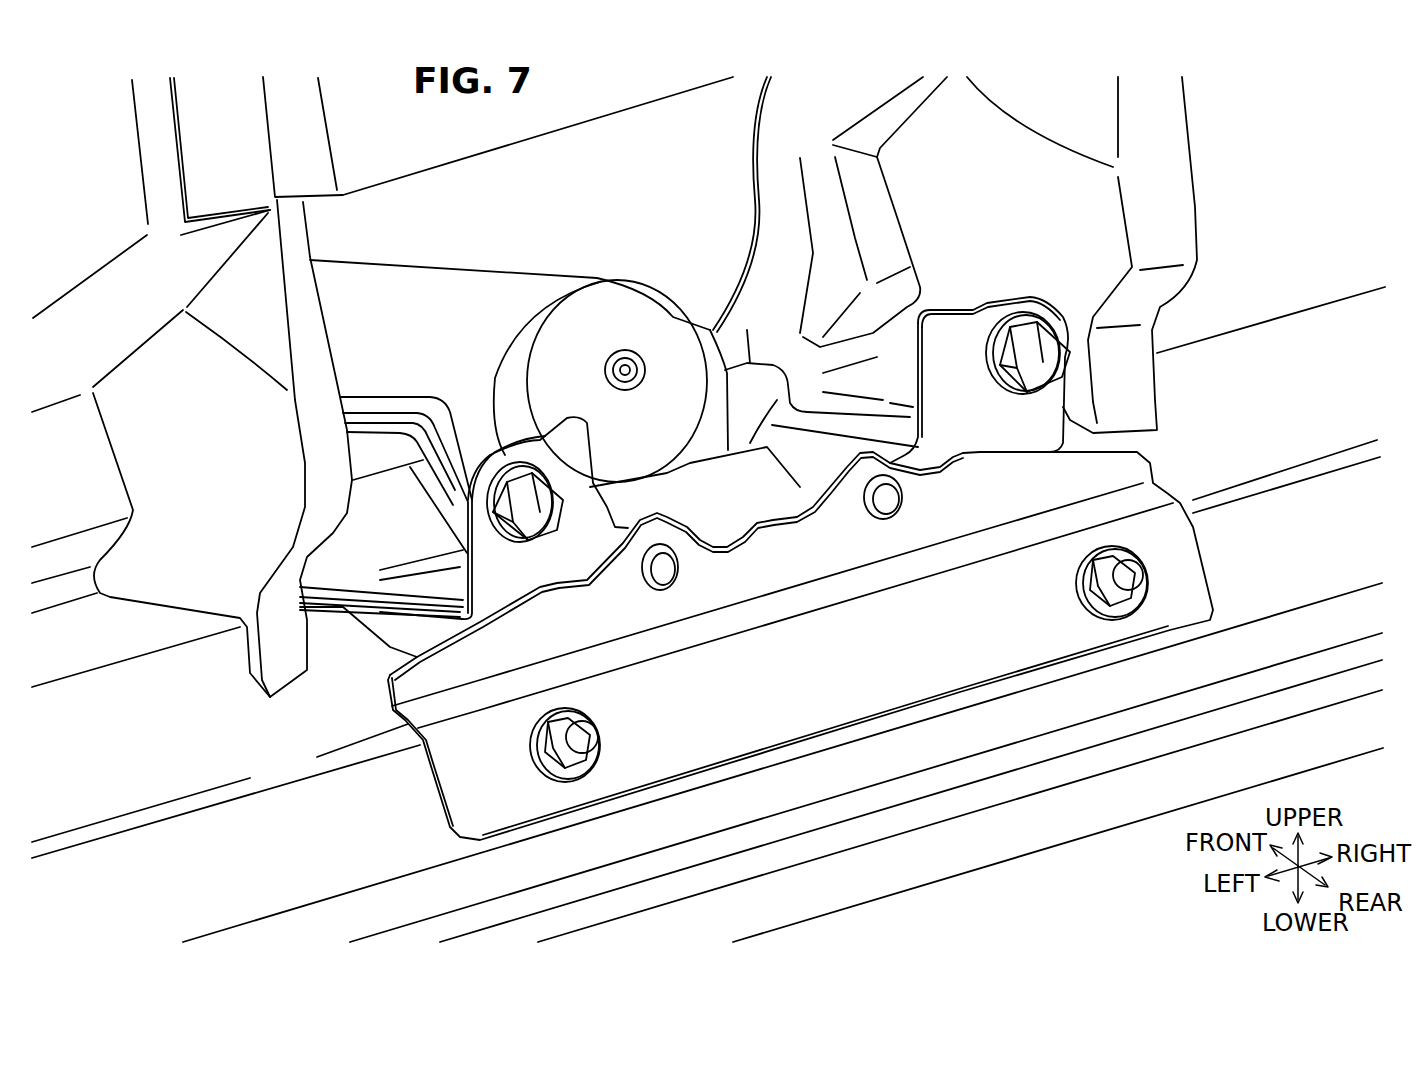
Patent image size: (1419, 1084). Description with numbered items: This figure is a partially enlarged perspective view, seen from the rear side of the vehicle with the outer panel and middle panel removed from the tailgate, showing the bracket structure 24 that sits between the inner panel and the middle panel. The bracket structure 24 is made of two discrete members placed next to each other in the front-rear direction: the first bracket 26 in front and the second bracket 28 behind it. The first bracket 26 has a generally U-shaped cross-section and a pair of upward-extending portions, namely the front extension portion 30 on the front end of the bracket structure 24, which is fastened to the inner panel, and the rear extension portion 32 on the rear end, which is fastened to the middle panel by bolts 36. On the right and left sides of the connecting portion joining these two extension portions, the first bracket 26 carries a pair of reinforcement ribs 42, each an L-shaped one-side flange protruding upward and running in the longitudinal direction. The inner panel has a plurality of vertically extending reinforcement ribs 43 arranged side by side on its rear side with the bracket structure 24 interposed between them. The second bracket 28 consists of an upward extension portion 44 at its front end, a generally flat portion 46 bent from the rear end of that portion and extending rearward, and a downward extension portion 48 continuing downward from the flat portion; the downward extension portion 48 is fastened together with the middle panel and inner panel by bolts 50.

The bracket structure 24 is at (315, 700).
The first bracket 26 is at (333, 622).
The second bracket 28 is at (427, 768).
The front extension portion 30 is at (372, 473).
The rear extension portion 32 is at (500, 447).
The bolts 36 is at (540, 508).
The reinforcement ribs 42 is at (393, 607).
The reinforcement ribs 43 is at (320, 440).
The upward extension portion 44 is at (623, 605).
The generally flat portion 46 is at (782, 602).
The downward extension portion 48 is at (933, 640).
The bolts 50 is at (597, 735).